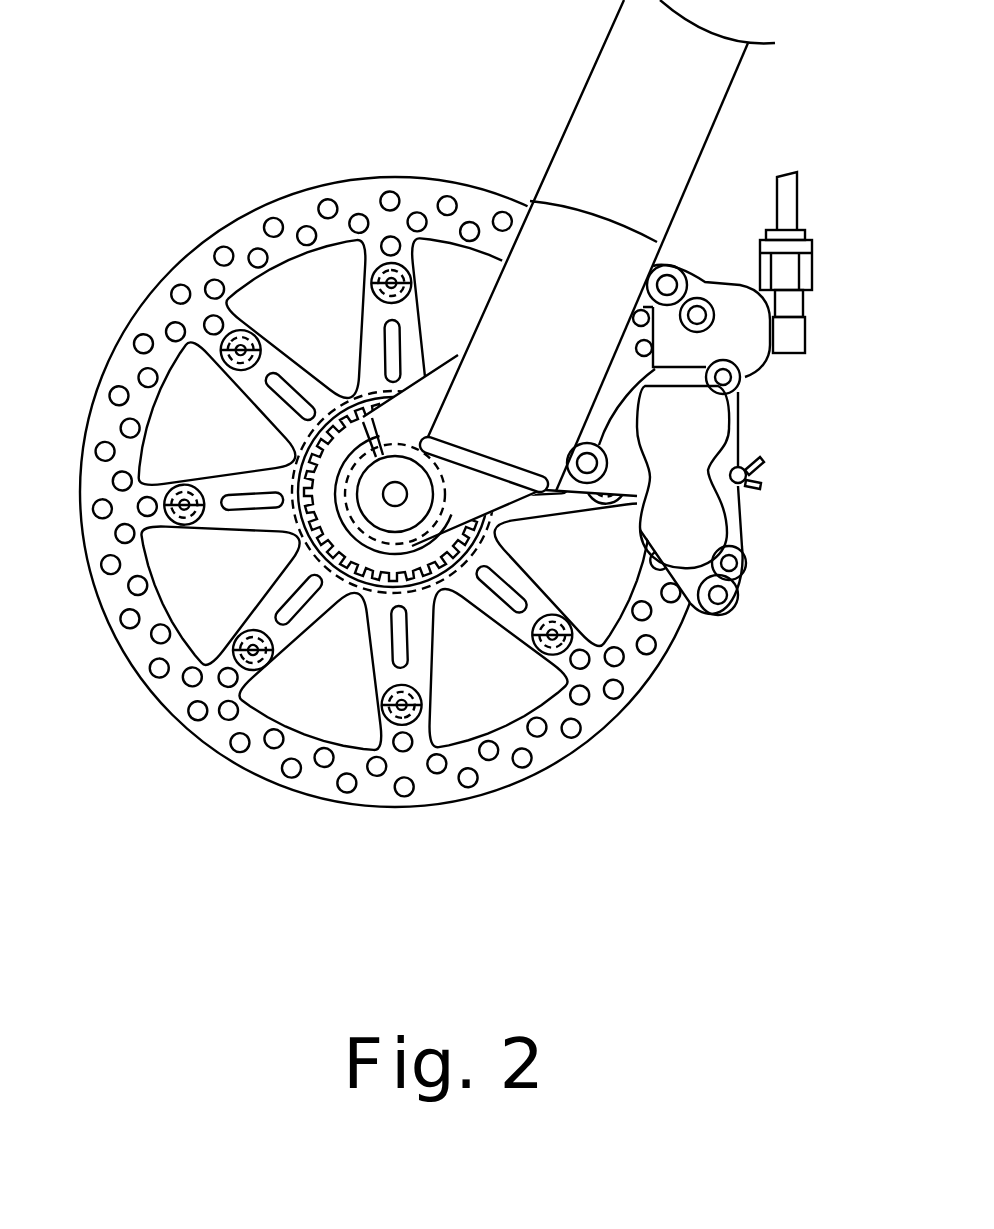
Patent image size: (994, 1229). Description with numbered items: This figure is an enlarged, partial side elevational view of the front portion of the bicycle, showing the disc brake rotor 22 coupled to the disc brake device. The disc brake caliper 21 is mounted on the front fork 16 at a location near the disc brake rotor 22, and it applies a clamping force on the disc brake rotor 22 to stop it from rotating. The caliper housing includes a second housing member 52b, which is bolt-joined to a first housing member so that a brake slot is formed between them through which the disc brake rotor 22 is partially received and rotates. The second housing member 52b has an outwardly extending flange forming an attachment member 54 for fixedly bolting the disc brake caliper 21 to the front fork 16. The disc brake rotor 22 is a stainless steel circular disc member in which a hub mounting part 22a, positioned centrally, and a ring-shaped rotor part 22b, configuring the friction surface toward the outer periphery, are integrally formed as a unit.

The front fork 16 is at (588, 75).
The disc brake caliper 21 is at (751, 439).
The disc brake rotor 22 is at (395, 493).
The hub mounting part 22a is at (300, 542).
The ring-shaped rotor part 22b is at (168, 695).
The second housing member 52b is at (742, 495).
The attachment member 54 is at (607, 437).